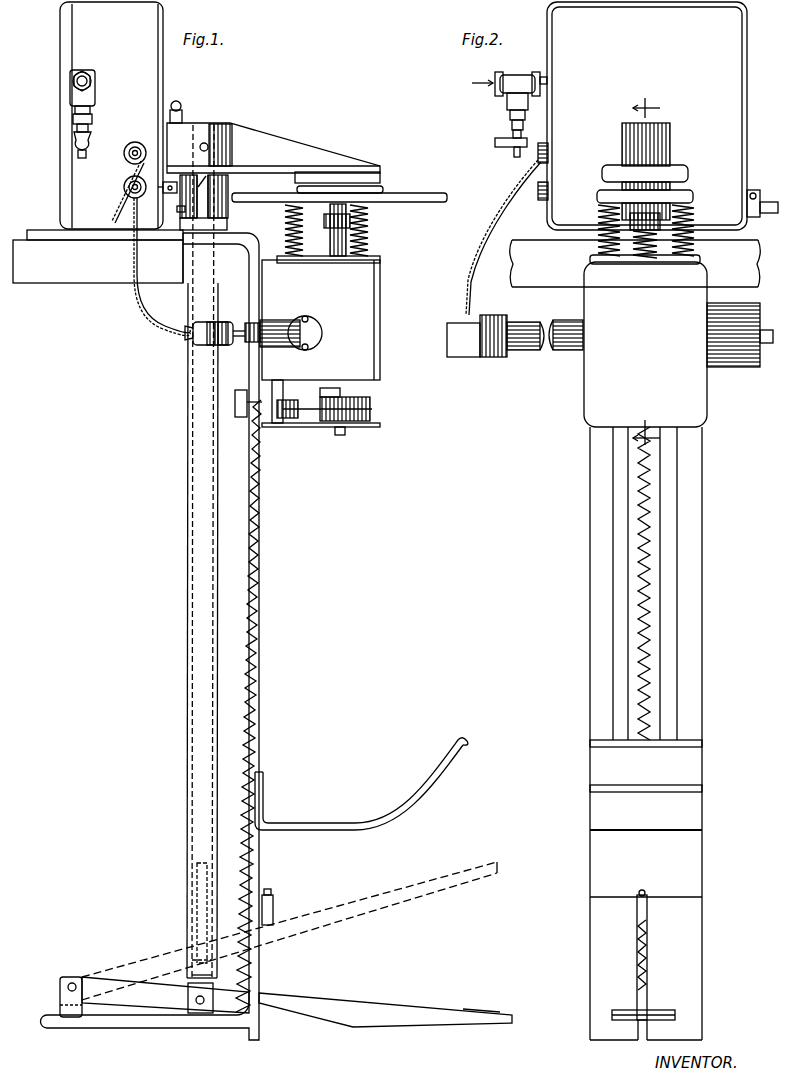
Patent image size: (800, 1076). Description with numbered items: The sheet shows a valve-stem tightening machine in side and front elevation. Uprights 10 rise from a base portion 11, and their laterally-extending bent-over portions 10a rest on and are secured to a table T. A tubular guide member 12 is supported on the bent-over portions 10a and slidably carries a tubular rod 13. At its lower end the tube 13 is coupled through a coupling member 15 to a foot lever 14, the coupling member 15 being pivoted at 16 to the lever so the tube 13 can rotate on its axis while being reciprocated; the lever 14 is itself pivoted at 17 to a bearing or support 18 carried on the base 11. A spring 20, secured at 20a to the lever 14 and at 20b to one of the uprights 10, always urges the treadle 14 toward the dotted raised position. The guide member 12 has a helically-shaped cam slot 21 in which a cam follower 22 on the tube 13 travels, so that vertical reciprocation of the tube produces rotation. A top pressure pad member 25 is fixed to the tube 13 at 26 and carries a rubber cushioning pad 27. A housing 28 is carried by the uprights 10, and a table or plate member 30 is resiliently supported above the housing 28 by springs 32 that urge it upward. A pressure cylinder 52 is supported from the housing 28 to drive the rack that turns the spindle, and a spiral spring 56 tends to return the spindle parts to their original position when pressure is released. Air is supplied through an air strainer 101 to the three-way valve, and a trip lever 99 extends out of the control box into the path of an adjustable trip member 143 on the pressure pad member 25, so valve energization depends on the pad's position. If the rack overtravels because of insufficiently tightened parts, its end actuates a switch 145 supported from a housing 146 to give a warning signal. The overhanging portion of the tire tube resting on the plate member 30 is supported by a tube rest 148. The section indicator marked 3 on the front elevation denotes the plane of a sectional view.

In FIG. 1, the uprights 10 is at (259, 685).
In FIG. 2, the uprights 10 is at (592, 670).
In FIG. 1, the bent-over portions 10a is at (40, 234).
In FIG. 1, the base portion 11 is at (116, 1020).
In FIG. 1, the tubular guide member 12 is at (222, 187).
In FIG. 2, the tubular guide member 12 is at (621, 188).
In FIG. 1, the tubular rod 13 is at (196, 551).
In FIG. 2, the tubular rod 13 is at (655, 565).
In FIG. 1, the foot lever 14 is at (346, 1010).
In FIG. 2, the foot lever 14 is at (668, 1008).
In FIG. 1, the coupling member 15 is at (193, 990).
In FIG. 1, the pivot 16 is at (200, 1004).
In FIG. 1, the pivot 17 is at (72, 984).
In FIG. 1, the bearing or support 18 is at (62, 1008).
In FIG. 1, the spring 20 is at (240, 762).
In FIG. 2, the spring 20 is at (649, 636).
In FIG. 1, the spring attachment to lever 20a is at (236, 992).
In FIG. 1, the spring attachment to upright 20b is at (263, 406).
In FIG. 1, the helically-shaped cam slot 21 is at (199, 188).
In FIG. 1, the cam follower 22 is at (173, 226).
In FIG. 1, the top pressure pad member 25 is at (286, 149).
In FIG. 2, the top pressure pad member 25 is at (653, 148).
In FIG. 1, the fixing point 26 is at (204, 143).
In FIG. 1, the cushioning pad 27 is at (380, 178).
In FIG. 2, the cushioning pad 27 is at (688, 175).
In FIG. 1, the housing 28 is at (376, 316).
In FIG. 2, the housing 28 is at (700, 409).
In FIG. 1, the table or plate member 30 is at (422, 203).
In FIG. 2, the table or plate member 30 is at (693, 198).
In FIG. 1, the springs 32 is at (290, 232).
In FIG. 2, the springs 32 is at (598, 246).
In FIG. 2, the pressure cylinder 52 is at (741, 366).
In FIG. 1, the spiral spring 56 is at (372, 412).
In FIG. 1, the trip lever 99 is at (163, 194).
In FIG. 1, the air strainer 101 is at (93, 90).
In FIG. 2, the air strainer 101 is at (512, 96).
In FIG. 1, the adjustable trip member 143 is at (171, 182).
In FIG. 2, the switch 145 is at (470, 340).
In FIG. 2, the housing 146 is at (536, 350).
In FIG. 1, the tube rest 148 is at (380, 810).
In FIG. 2, the tube rest 148 is at (692, 777).
In FIG. 1, the table T is at (90, 280).
In FIG. 2, the table T is at (558, 279).
In FIG. 2, the section line 3 is at (653, 273).